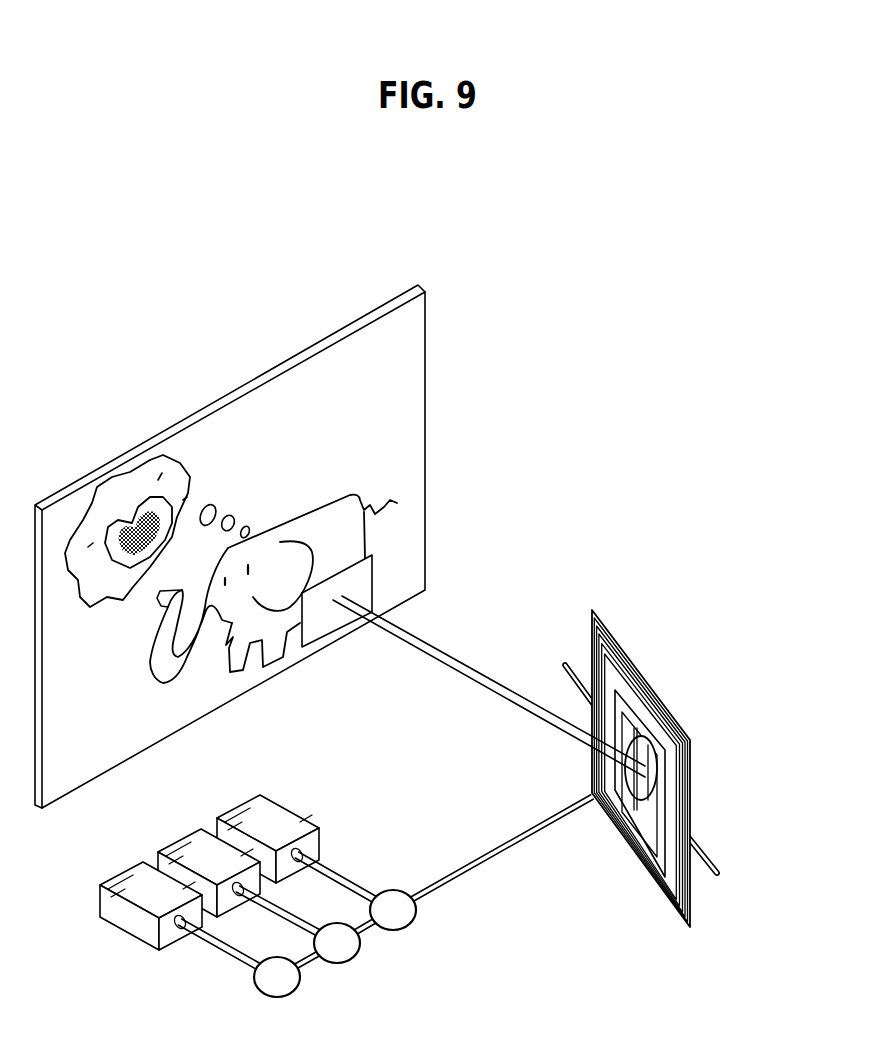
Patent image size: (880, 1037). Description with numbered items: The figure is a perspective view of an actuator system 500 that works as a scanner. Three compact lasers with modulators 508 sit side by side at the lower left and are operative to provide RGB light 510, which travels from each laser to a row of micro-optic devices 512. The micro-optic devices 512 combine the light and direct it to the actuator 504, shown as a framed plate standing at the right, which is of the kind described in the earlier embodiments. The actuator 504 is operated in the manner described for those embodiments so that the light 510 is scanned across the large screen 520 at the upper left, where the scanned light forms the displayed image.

The actuator system 500 is at (536, 466).
The actuator 504 is at (719, 778).
The compact lasers with modulators 508 is at (297, 803).
The RGB light 510 is at (351, 878).
The micro-optic devices 512 is at (400, 912).
The screen 520 is at (426, 382).